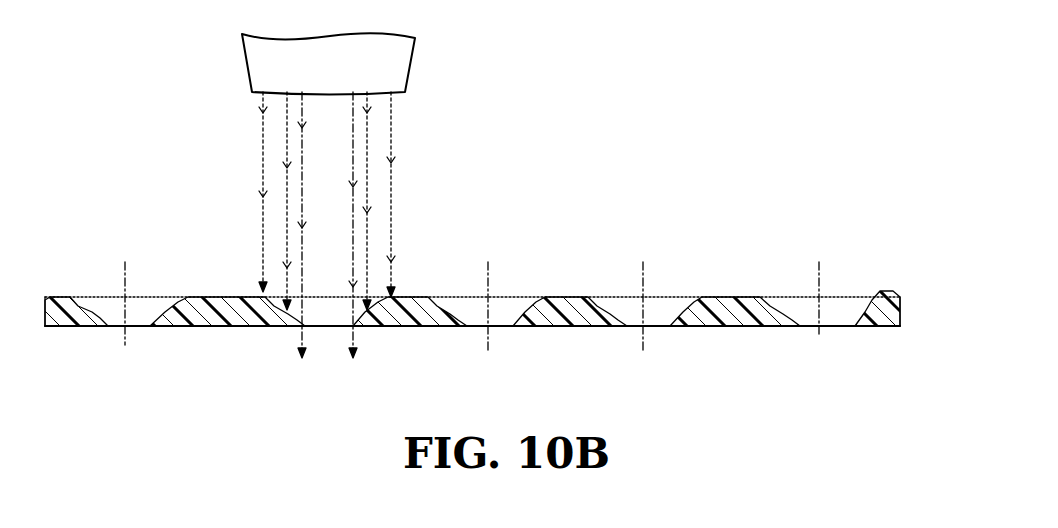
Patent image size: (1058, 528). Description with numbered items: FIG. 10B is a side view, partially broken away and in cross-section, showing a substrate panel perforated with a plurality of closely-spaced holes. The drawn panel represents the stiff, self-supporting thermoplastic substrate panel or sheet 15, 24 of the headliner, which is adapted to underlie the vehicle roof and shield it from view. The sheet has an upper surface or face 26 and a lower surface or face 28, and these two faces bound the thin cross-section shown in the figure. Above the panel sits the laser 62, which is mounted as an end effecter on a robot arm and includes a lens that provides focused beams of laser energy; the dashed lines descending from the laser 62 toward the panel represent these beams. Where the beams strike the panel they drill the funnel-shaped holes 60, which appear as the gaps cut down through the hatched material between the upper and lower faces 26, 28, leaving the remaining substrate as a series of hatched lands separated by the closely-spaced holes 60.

The substrate panel 15 is at (505, 278).
The substrate panel or thermoplastic sheet 24 is at (908, 310).
The upper surface or face 26 is at (858, 320).
The lower surface or face 28 is at (705, 332).
The holes 60 is at (105, 322).
The laser 62 is at (415, 58).